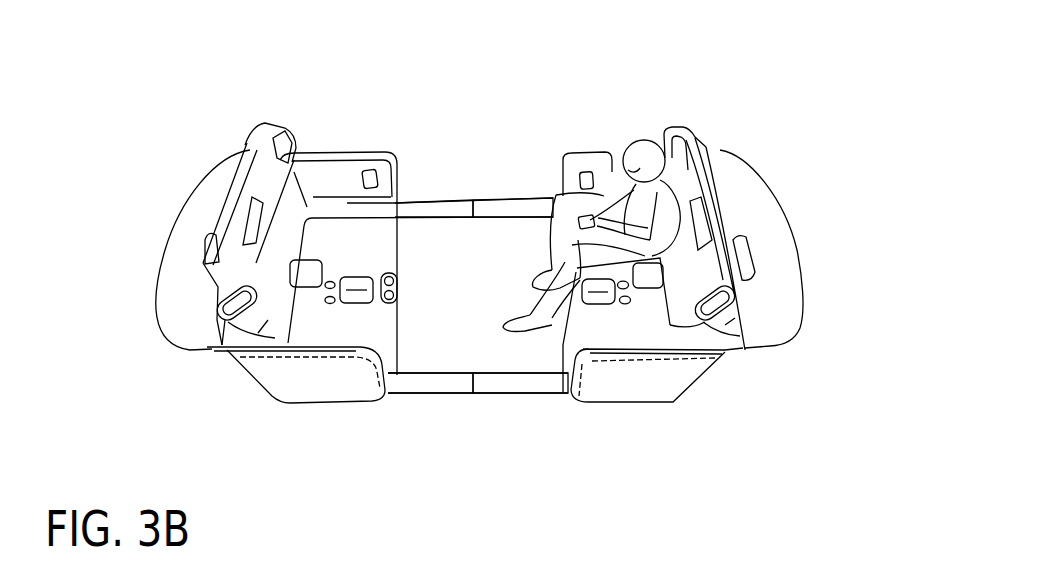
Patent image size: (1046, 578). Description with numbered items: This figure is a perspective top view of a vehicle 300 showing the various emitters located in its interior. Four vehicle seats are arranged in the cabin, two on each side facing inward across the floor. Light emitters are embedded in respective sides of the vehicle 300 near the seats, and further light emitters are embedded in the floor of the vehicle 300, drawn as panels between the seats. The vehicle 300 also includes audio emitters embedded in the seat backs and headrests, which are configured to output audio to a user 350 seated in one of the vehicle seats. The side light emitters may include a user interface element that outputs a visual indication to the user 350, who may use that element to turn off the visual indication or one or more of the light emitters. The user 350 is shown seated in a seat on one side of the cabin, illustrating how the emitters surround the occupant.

The vehicle 300 is at (263, 382).
The user 350 is at (670, 198).